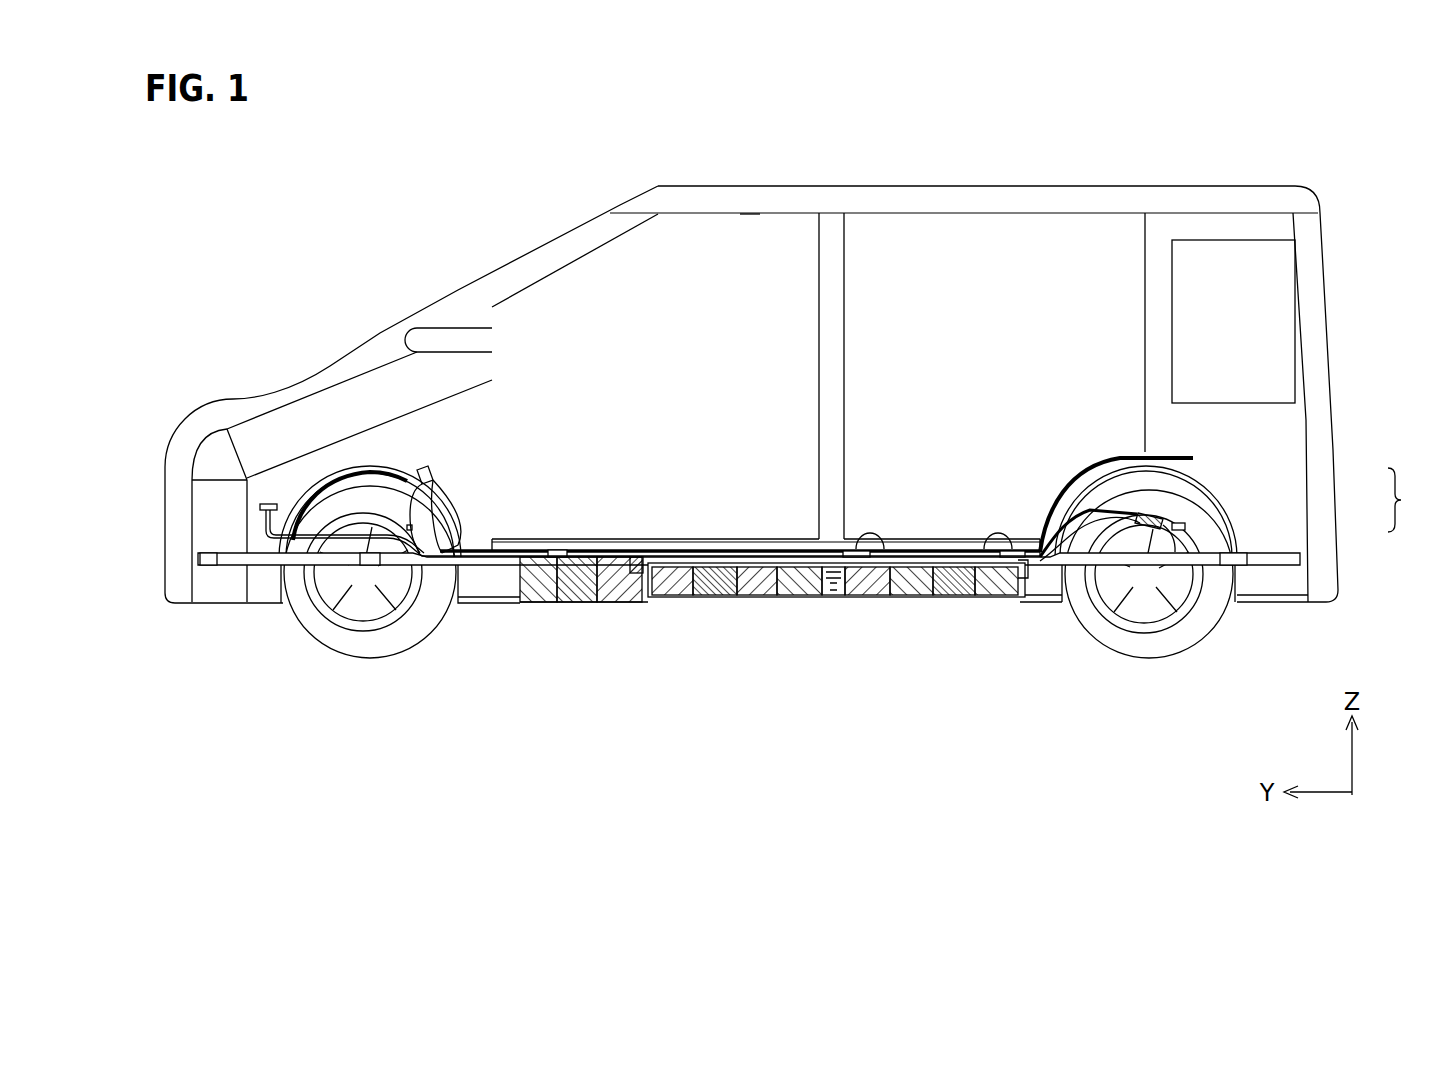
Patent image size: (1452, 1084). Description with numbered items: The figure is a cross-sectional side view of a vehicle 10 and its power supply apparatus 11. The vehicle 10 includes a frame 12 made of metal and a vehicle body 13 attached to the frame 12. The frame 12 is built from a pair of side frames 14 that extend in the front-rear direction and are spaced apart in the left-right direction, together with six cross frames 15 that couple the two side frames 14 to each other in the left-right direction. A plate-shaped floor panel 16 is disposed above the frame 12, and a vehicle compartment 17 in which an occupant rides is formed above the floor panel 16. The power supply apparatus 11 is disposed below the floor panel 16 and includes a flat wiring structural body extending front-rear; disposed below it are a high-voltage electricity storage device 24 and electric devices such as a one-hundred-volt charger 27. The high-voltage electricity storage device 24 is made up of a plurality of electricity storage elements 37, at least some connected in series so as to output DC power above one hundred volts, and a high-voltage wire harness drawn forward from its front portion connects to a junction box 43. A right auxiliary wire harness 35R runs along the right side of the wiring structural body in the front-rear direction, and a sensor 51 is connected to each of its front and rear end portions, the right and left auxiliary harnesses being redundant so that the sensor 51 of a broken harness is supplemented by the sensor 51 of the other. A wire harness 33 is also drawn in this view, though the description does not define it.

The vehicle 10 is at (1319, 158).
The power supply apparatus 11 is at (838, 635).
The frame 12 is at (1409, 500).
The vehicle body 13 is at (1028, 200).
The side frame 14 is at (1277, 558).
The cross frame 15 is at (208, 567).
The floor panel 16 is at (1183, 455).
The vehicle compartment 17 is at (760, 214).
The high-voltage electricity storage device 24 is at (835, 639).
The 100-V charger 27 is at (538, 603).
The wire harness 33 is at (1065, 541).
The right auxiliary wire harness 35R is at (315, 538).
The electricity storage element 37 is at (800, 586).
The junction box 43 is at (620, 603).
The sensor 51 is at (268, 504).